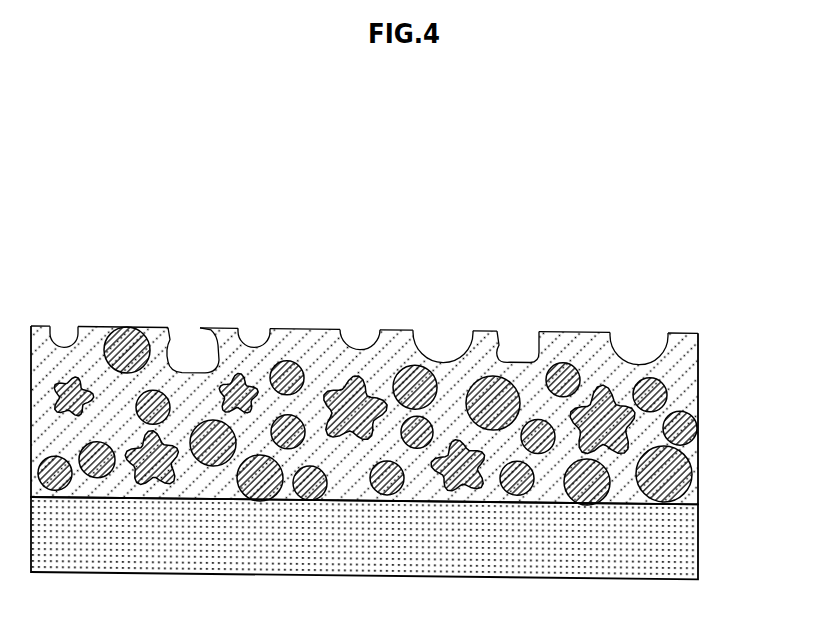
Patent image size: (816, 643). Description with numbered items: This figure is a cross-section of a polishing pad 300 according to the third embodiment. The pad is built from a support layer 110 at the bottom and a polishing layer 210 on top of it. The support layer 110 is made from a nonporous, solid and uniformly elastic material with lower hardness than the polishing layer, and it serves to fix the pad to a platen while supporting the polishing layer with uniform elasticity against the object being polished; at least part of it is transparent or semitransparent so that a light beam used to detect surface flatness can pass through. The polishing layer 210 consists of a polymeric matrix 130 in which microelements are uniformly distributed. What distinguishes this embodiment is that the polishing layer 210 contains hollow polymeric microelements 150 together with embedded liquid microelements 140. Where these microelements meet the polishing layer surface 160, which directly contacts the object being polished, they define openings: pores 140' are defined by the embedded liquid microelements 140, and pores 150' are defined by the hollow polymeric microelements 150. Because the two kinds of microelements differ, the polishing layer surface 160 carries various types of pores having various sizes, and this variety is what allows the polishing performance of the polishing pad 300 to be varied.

The polishing pad 300 is at (660, 204).
The support layer 110 is at (707, 500).
The polishing layer 210 is at (401, 342).
The polymeric matrix 130 is at (600, 367).
The embedded liquid microelements 140 is at (367, 367).
The pores 140' is at (359, 314).
The hollow polymeric microelements 150 is at (344, 335).
The pores 150' is at (358, 323).
The polishing layer surface 160 is at (307, 327).